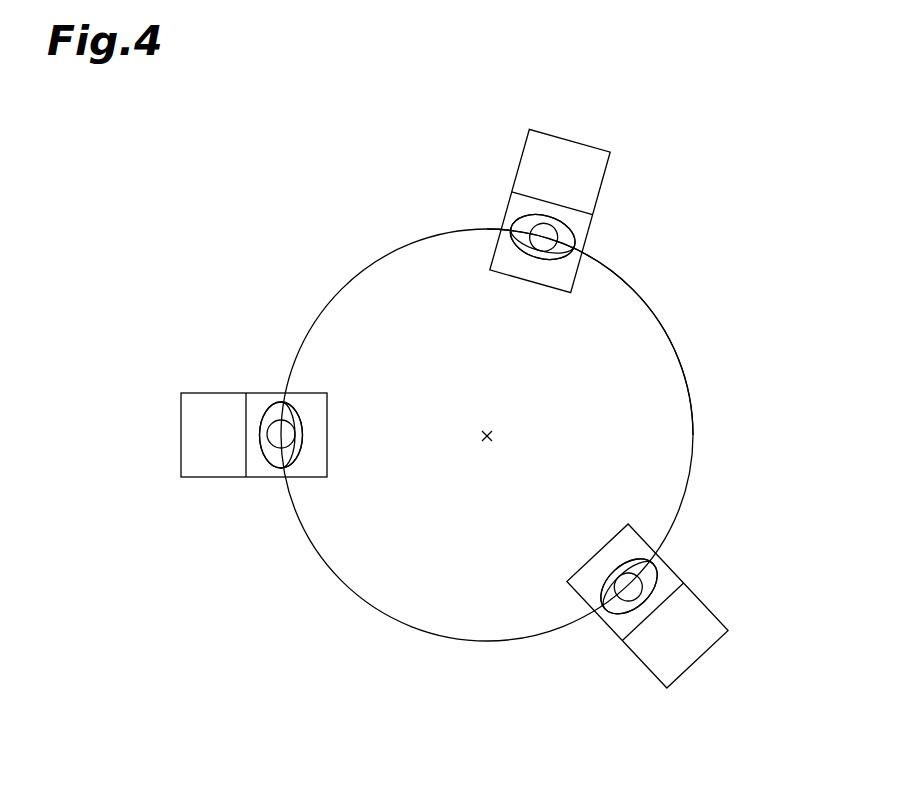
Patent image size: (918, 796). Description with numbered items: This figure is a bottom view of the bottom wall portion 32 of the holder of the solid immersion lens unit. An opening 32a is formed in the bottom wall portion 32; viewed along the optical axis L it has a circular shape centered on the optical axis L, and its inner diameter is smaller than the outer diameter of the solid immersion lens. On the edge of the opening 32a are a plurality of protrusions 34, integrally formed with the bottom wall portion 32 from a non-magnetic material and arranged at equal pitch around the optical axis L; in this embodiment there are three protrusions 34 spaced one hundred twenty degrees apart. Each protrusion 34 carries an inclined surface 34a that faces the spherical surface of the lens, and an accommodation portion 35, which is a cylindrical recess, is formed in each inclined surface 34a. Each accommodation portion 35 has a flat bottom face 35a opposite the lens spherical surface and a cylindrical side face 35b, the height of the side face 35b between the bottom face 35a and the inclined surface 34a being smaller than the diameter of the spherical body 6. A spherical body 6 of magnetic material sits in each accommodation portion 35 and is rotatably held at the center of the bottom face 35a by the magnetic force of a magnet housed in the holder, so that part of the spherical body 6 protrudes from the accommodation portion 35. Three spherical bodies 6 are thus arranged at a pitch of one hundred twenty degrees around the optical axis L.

The spherical body 6 is at (277, 430).
The bottom wall portion 32 is at (778, 477).
The opening 32a is at (684, 392).
The protrusion 34 is at (199, 392).
The inclined surface 34a is at (258, 471).
The accommodation portion 35 is at (300, 420).
The bottom face 35a is at (300, 459).
The side face 35b is at (282, 400).
The optical axis L is at (487, 438).